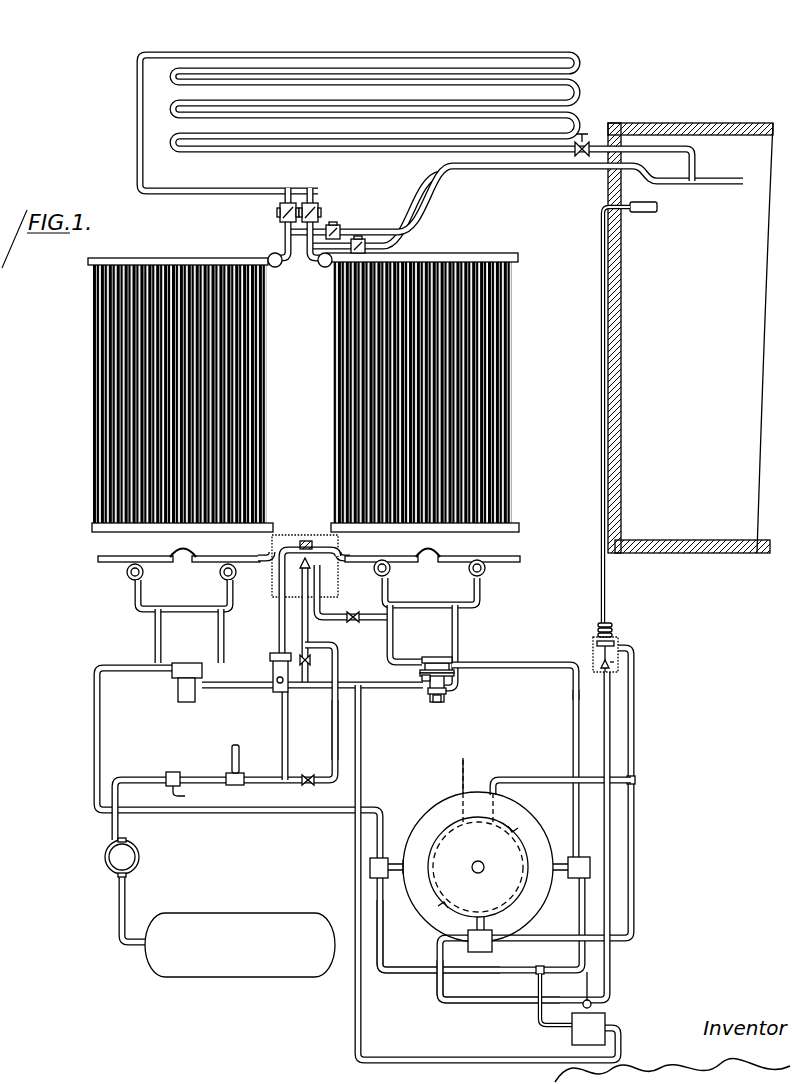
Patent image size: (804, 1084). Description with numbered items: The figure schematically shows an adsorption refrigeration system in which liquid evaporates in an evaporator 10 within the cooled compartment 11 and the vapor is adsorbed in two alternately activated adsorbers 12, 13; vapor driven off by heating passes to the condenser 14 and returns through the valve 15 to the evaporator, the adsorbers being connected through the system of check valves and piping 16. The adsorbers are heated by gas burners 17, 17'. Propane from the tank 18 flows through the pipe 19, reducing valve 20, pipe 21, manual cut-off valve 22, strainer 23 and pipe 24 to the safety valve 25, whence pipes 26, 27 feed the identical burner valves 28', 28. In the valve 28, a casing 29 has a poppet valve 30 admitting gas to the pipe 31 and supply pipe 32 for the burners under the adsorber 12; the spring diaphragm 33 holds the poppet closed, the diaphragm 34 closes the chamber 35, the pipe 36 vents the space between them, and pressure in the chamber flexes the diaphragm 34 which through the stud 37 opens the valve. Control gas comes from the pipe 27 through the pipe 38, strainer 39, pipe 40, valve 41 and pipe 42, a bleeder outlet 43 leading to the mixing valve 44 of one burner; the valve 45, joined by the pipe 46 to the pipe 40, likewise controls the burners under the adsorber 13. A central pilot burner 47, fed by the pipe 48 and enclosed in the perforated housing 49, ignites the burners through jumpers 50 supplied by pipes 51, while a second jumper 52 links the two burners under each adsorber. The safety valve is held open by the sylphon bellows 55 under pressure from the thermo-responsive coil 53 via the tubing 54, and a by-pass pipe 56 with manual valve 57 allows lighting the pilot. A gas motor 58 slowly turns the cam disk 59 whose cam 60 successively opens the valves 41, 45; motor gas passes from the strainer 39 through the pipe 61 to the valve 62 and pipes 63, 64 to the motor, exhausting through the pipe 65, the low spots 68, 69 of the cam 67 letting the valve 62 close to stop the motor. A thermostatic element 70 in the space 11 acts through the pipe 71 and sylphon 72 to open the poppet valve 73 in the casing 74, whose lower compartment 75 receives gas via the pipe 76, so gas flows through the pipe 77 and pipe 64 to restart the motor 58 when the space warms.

The evaporator 10 is at (715, 183).
The space or compartment 11 is at (636, 394).
The adsorber 12 is at (510, 382).
The adsorber 13 is at (263, 386).
The condenser 14 is at (300, 52).
The valve 15 is at (580, 153).
The system of check valves and piping 16 is at (318, 222).
The gas burners 17 is at (432, 571).
The gas burners 17' is at (179, 606).
The drum or tank 18 is at (200, 922).
The pipe 19 is at (126, 892).
The reducing valve 20 is at (112, 857).
The pipe 21 is at (134, 778).
The manual cut-off valve 22 is at (176, 772).
The strainer 23 is at (243, 770).
The pipe 24 is at (290, 716).
The safety or pilot controlled valve 25 is at (275, 690).
The pipe 26 is at (245, 684).
The pipe 27 is at (351, 682).
The burner valve 28 is at (418, 707).
The burner valve 28' is at (189, 699).
The casing 29 is at (456, 688).
The poppet valve 30 is at (440, 702).
The pipe 31 is at (460, 622).
The supply pipe 32 is at (428, 607).
The spring diaphragm 33 is at (425, 677).
The diaphragm 34 is at (431, 658).
The chamber 35 is at (441, 659).
The pipe 36 is at (475, 667).
The stud 37 is at (453, 664).
The pipe 38 is at (363, 766).
The strainer 39 is at (598, 1027).
The pipe 40 is at (546, 981).
The valve 41 is at (585, 878).
The pipe 42 is at (576, 708).
The bleeder outlet 43 is at (393, 641).
The mixing valve 44 is at (386, 573).
The valve 45 is at (370, 866).
The pipe 46 is at (410, 972).
The pilot burner 47 is at (310, 578).
The pipe 48 is at (307, 638).
The perforated housing 49 is at (290, 533).
The jumper or secondary pilot 50 is at (258, 556).
The pipe 51 is at (376, 619).
The second jumper 52 is at (432, 548).
The thermo-responsive coil 53 is at (308, 538).
The tubing 54 is at (280, 636).
The sylphon bellows 55 is at (290, 688).
The by-pass pipe 56 is at (334, 745).
The manually controlled valve 57 is at (313, 786).
The motor 58 is at (523, 835).
The cam disk 59 is at (431, 813).
The cam 60 is at (413, 890).
The pipe 61 is at (478, 1003).
The valve 62 is at (478, 944).
The pipe 63 is at (636, 794).
The pipe 64 is at (538, 779).
The pipe 65 is at (464, 765).
The cam 67 is at (432, 845).
The low spot 68 is at (503, 826).
The low spot 69 is at (463, 914).
The thermostatic element 70 is at (642, 212).
The pipe 71 is at (600, 462).
The sylphon 72 is at (614, 630).
The poppet valve 73 is at (604, 670).
The casing 74 is at (620, 656).
The lower compartment 75 is at (614, 668).
The pipe 76 is at (612, 738).
The pipe 77 is at (634, 713).